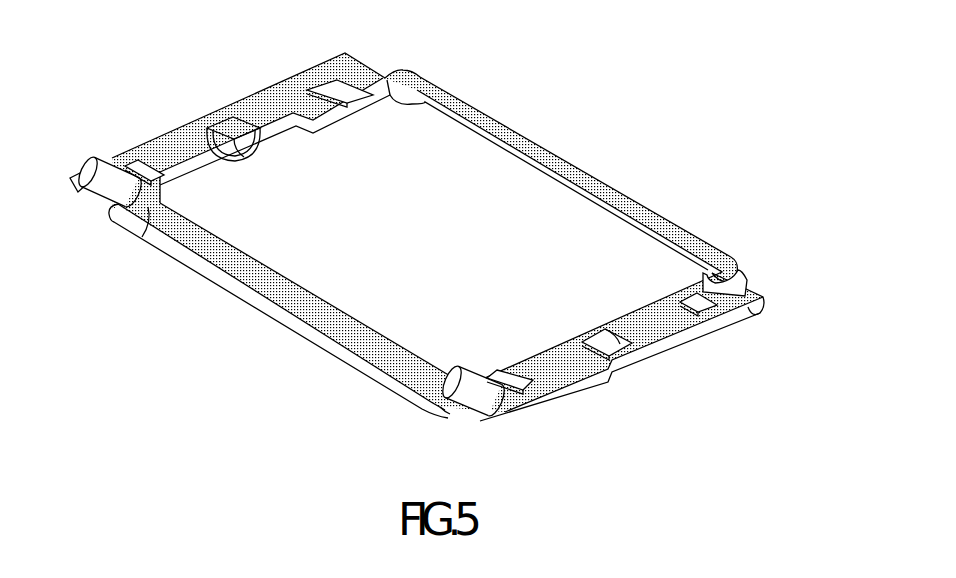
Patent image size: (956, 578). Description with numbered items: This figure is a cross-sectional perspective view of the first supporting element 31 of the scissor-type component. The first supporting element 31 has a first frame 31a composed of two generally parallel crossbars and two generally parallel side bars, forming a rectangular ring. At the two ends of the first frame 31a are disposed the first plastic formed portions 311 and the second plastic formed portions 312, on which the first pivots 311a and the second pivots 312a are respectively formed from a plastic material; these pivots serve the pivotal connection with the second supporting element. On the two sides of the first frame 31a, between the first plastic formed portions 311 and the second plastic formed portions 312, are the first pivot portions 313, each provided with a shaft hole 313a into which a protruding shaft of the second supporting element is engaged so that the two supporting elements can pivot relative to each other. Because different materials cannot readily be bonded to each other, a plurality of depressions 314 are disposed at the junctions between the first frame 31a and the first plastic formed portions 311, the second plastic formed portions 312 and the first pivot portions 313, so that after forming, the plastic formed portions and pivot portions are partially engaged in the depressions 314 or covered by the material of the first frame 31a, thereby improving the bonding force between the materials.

The first supporting element 31 is at (587, 153).
The first frame 31a is at (290, 93).
The first plastic formed portion 311 is at (468, 411).
The first pivot 311a is at (473, 387).
The second plastic formed portion 312 is at (746, 282).
The second pivot 312a is at (720, 280).
The first pivot portion 313 is at (213, 113).
The shaft hole 313a is at (260, 147).
The depression 314 is at (250, 127).